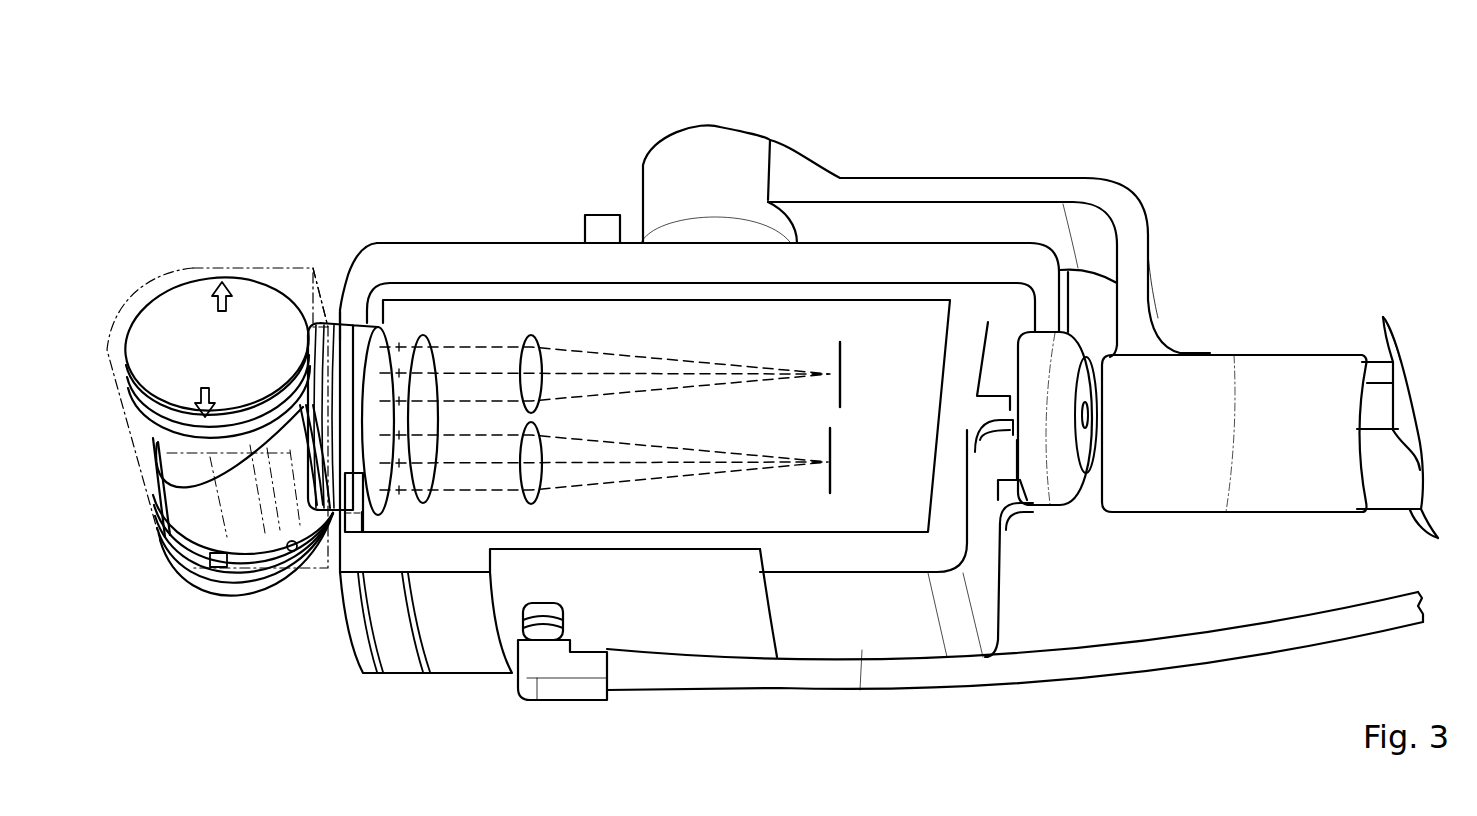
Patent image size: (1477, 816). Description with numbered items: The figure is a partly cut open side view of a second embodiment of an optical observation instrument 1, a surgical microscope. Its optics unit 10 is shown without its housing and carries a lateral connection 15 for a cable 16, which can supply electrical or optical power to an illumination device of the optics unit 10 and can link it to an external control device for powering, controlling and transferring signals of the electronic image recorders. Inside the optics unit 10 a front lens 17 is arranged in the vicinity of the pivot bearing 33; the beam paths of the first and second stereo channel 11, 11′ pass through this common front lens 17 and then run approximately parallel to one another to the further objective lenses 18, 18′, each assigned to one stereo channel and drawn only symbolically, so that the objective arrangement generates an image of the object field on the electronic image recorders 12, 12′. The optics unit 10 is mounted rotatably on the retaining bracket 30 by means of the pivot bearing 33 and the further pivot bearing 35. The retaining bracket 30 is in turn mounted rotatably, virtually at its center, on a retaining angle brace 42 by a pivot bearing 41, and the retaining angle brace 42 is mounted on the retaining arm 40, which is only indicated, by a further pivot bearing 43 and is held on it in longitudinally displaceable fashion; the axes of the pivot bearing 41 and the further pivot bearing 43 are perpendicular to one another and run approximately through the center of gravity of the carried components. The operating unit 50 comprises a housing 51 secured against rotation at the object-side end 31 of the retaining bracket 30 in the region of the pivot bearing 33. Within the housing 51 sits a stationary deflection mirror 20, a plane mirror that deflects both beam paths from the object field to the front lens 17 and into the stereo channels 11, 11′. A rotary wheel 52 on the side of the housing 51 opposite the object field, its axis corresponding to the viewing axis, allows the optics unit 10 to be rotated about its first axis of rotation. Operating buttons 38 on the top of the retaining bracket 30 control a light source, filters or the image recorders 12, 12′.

The optical observation instrument 1 is at (1252, 152).
The optics unit 10 is at (312, 657).
The first stereo channel 11 is at (477, 320).
The second stereo channel 11′ is at (475, 512).
The electronic image recorder 12 is at (846, 353).
The electronic image recorder 12′ is at (836, 438).
The lateral connection 15 is at (555, 612).
The cable 16 is at (1088, 665).
The front lens 17 is at (422, 334).
The objective lens 18 is at (531, 334).
The objective lens 18′ is at (541, 494).
The deflection mirror 20 is at (178, 472).
The retaining bracket 30 is at (573, 257).
The object-side end 31 is at (387, 204).
The pivot bearing 33 is at (350, 320).
The further pivot bearing 35 is at (1067, 483).
The operating buttons 38 is at (602, 213).
The retaining arm 40 is at (1398, 407).
The pivot bearing 41 is at (667, 230).
The retaining angle brace 42 is at (1018, 192).
The further pivot bearing 43 is at (1283, 383).
The operating unit 50 is at (176, 244).
The housing 51 is at (123, 330).
The rotary wheel 52 is at (245, 287).